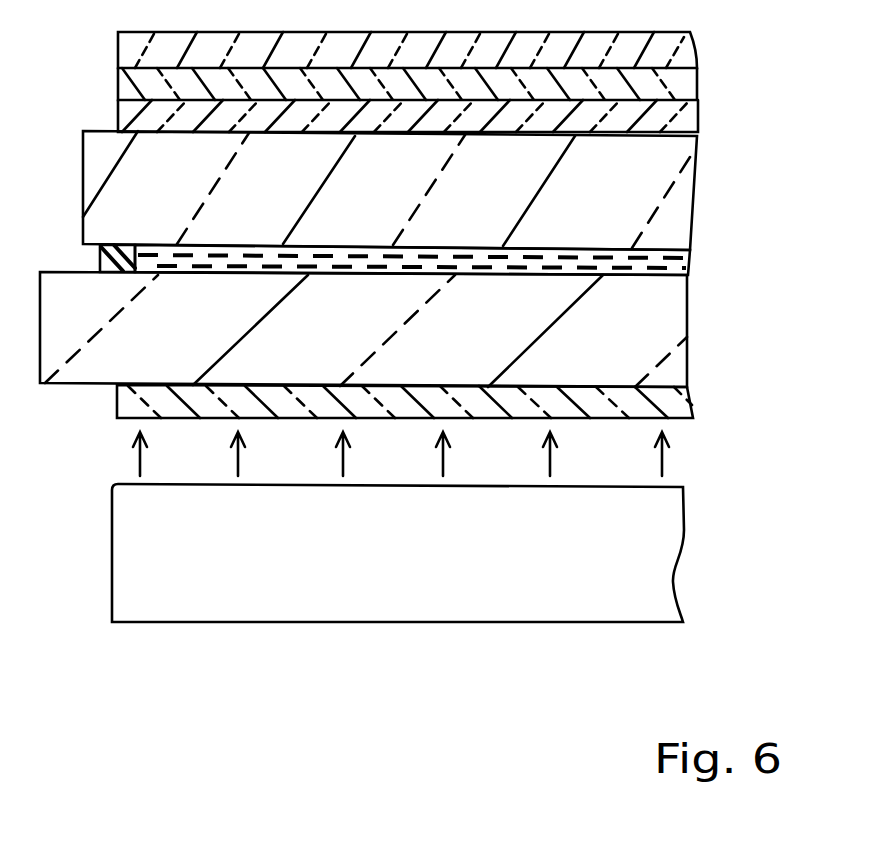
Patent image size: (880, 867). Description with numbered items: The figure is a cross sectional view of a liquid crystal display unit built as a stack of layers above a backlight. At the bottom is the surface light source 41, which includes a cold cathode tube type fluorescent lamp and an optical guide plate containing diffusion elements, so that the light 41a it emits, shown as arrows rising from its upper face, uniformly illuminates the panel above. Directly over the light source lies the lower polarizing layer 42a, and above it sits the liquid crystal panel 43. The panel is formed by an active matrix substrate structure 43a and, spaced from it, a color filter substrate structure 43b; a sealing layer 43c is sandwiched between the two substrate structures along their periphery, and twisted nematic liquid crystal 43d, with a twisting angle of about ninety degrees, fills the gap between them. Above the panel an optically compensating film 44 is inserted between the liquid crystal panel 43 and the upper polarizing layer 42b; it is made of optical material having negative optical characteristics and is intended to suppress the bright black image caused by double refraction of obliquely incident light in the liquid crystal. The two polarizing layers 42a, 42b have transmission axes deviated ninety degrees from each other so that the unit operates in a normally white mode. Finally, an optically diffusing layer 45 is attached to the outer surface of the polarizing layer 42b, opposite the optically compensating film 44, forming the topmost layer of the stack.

The surface light source 41 is at (684, 535).
The light 41a is at (670, 461).
The polarizing layer 42a is at (690, 402).
The polarizing layer 42b is at (698, 82).
The liquid crystal panel 43 is at (448, 259).
The active matrix substrate structure 43a is at (687, 340).
The color filter substrate structure 43b is at (697, 172).
The sealing layer 43c is at (96, 258).
The twisted nematic liquid crystal 43d is at (672, 258).
The optically compensating film 44 is at (698, 115).
The optically diffusing layer 45 is at (690, 38).